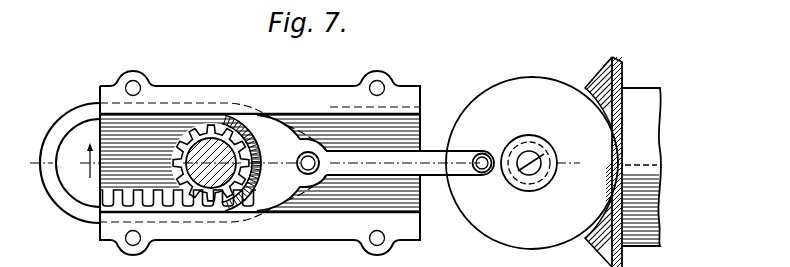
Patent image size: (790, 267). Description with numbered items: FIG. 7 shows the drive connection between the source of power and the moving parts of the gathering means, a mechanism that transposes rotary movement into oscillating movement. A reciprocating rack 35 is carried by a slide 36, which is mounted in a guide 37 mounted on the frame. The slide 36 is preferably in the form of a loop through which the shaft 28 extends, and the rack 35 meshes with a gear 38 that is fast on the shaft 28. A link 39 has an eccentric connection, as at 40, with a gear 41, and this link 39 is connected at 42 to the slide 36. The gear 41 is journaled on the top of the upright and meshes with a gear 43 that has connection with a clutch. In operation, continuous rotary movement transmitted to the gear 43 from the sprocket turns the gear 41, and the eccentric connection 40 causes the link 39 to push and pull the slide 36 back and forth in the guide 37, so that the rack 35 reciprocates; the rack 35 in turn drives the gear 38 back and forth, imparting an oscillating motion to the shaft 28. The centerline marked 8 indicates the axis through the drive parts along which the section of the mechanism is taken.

The section line 8- 8 is at (309, 164).
The shaft 28 is at (200, 145).
The reciprocating rack 35 is at (107, 201).
The slide 36 is at (76, 114).
The guide 37 is at (277, 92).
The gear 38 is at (236, 136).
The link 39 is at (436, 152).
The eccentric connection 40 is at (483, 152).
The gear 41 is at (520, 92).
The connection 42 is at (309, 156).
The gear 43 is at (617, 70).